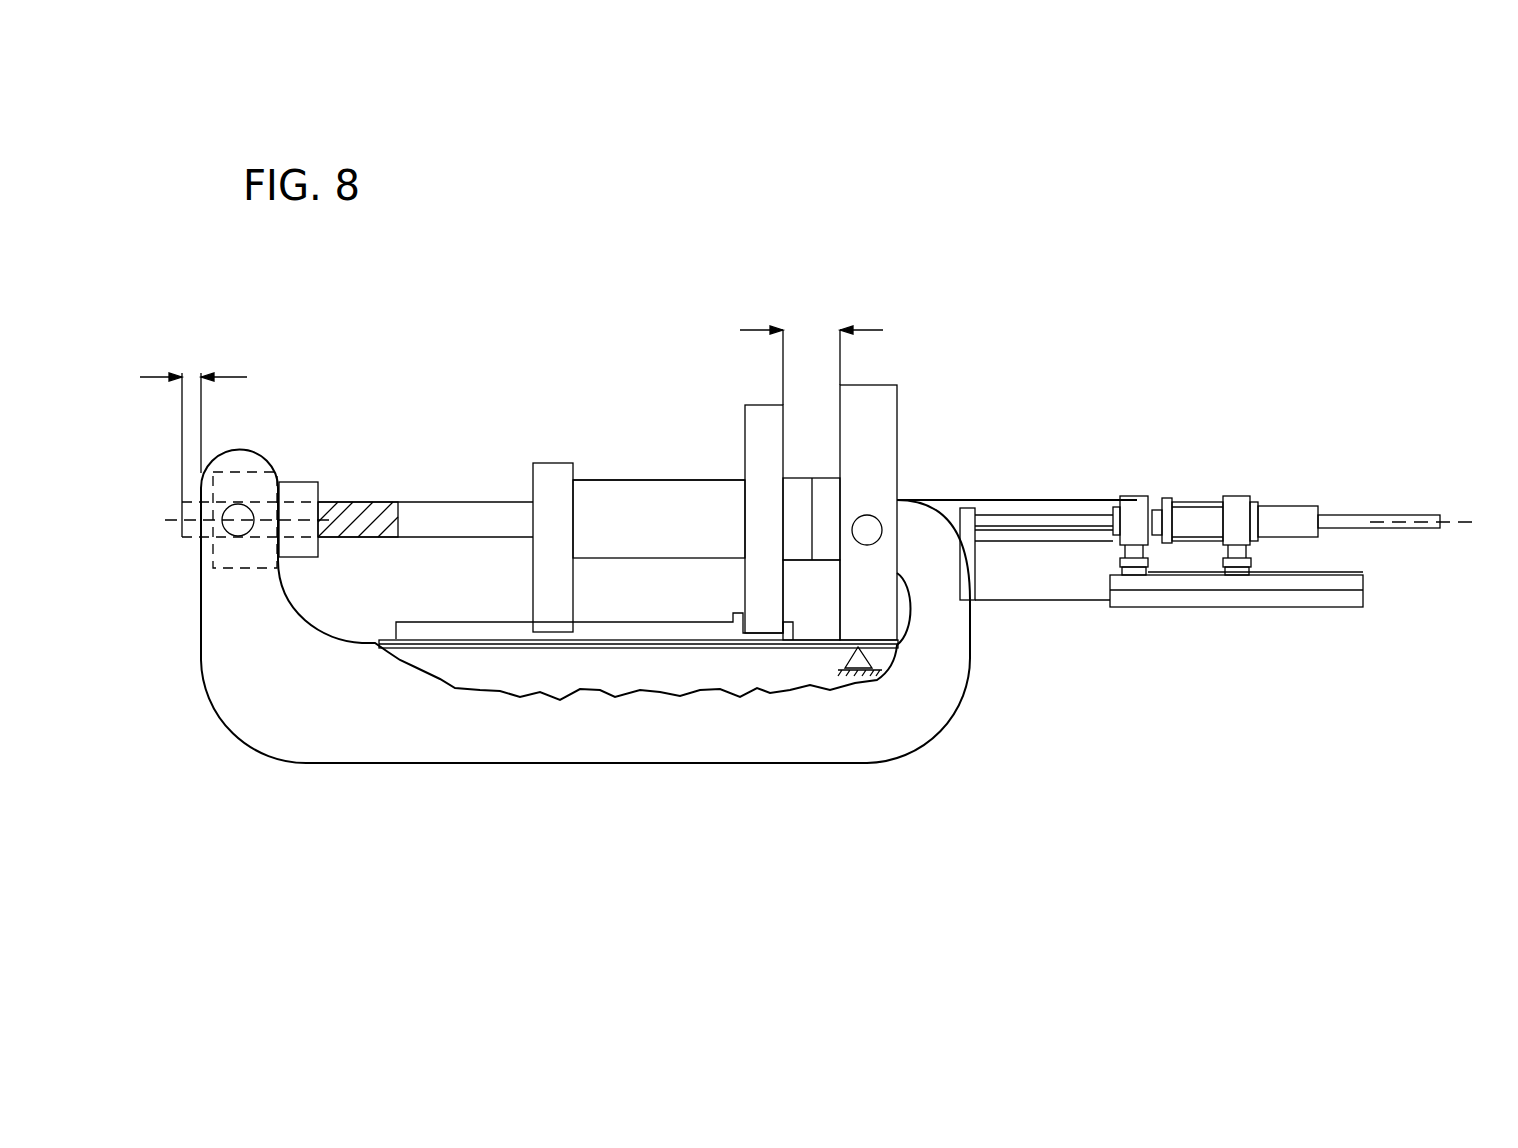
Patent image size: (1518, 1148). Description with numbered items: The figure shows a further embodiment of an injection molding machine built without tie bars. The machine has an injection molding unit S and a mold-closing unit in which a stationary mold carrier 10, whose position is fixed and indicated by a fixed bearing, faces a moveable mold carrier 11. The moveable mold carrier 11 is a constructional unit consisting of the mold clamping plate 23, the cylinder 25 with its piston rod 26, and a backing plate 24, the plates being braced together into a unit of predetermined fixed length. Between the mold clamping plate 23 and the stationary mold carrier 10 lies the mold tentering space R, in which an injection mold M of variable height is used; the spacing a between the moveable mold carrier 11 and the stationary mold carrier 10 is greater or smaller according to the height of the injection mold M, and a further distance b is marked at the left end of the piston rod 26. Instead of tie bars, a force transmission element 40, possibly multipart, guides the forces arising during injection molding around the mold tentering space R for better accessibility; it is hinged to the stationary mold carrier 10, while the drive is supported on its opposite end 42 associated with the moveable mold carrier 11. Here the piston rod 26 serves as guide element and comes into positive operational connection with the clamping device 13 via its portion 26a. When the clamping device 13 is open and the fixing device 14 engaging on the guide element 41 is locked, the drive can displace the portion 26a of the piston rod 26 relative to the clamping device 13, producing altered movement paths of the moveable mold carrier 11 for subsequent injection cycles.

The stationary mold carrier 10 is at (873, 412).
The moveable mold carrier 11 is at (617, 478).
The clamping device 13 is at (300, 490).
The fixing device 14 is at (742, 634).
The mold clamping plate 23 is at (762, 435).
The backing plate 24 is at (550, 495).
The cylinder 25 is at (659, 519).
The piston rod 26 is at (452, 518).
The portion 26a is at (357, 518).
The force transmission element 40 is at (593, 727).
The guide element 41 is at (663, 632).
The opposite end 42 is at (205, 578).
The injection mold M is at (825, 513).
The mold tentering space R is at (811, 600).
The injection molding unit S is at (1108, 452).
The spacing a is at (811, 317).
The distance b is at (193, 409).